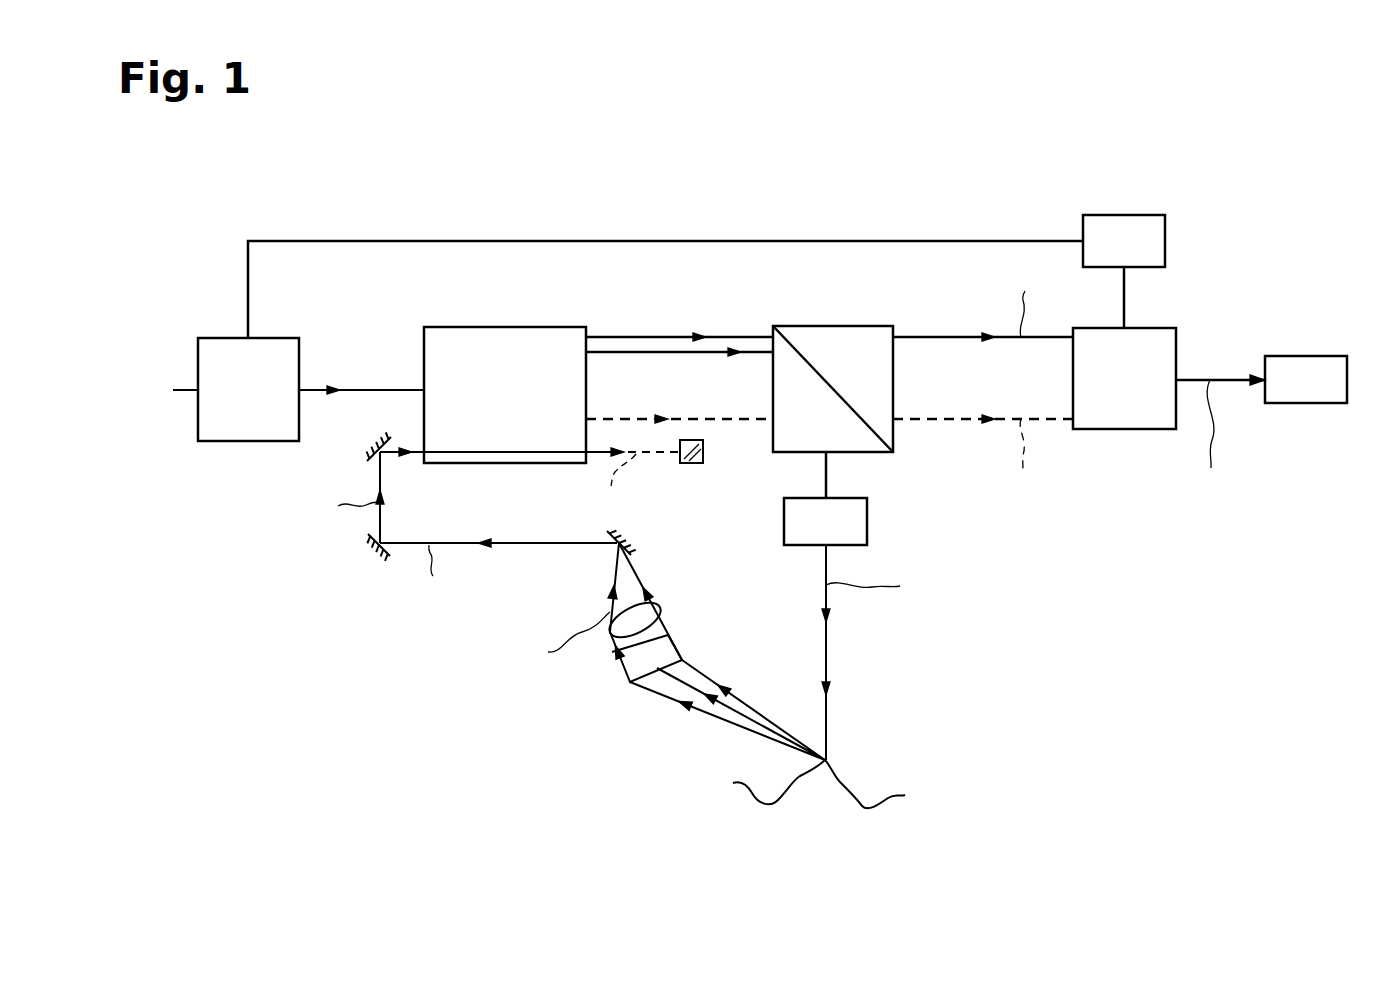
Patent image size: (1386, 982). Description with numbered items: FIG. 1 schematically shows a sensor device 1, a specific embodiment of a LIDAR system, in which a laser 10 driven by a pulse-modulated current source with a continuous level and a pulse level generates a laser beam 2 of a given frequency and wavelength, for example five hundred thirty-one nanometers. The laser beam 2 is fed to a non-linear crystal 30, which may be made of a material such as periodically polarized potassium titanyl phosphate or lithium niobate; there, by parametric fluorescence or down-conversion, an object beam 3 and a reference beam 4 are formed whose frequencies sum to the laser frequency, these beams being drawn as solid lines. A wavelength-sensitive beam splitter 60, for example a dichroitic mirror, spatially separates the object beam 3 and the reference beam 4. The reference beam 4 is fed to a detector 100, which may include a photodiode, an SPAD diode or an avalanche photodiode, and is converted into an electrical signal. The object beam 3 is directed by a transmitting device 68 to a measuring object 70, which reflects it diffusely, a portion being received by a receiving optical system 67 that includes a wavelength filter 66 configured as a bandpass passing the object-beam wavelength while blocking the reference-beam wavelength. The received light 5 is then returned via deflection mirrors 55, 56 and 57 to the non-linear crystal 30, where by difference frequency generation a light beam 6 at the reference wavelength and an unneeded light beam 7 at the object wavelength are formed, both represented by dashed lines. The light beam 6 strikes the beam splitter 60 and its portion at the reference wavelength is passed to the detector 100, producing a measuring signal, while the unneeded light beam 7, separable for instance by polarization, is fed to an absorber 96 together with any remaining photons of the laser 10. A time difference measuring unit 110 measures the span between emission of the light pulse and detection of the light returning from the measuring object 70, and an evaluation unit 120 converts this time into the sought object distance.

The device 1 is at (290, 688).
The laser beam 2 is at (384, 389).
The object beam 3 is at (613, 351).
The reference beam 4 is at (744, 336).
The light 5 is at (533, 545).
The light beam 6 is at (752, 421).
The light beam 7 is at (656, 454).
The laser 10 is at (219, 338).
The non-linear crystal 30 is at (503, 327).
The deflection mirror 55 is at (624, 530).
The deflection mirror 56 is at (368, 544).
The deflection mirror 57 is at (368, 455).
The wavelength-sensitive beam splitter 60 is at (829, 326).
The wavelength filter 66 is at (618, 674).
The receiving optical system 67 is at (658, 618).
The transmitting device 68 is at (867, 520).
The measuring object 70 is at (857, 786).
The absorber 96 is at (692, 463).
The detector 100 is at (1124, 429).
The time difference measuring unit 110 is at (1165, 241).
The evaluation unit 120 is at (1305, 403).